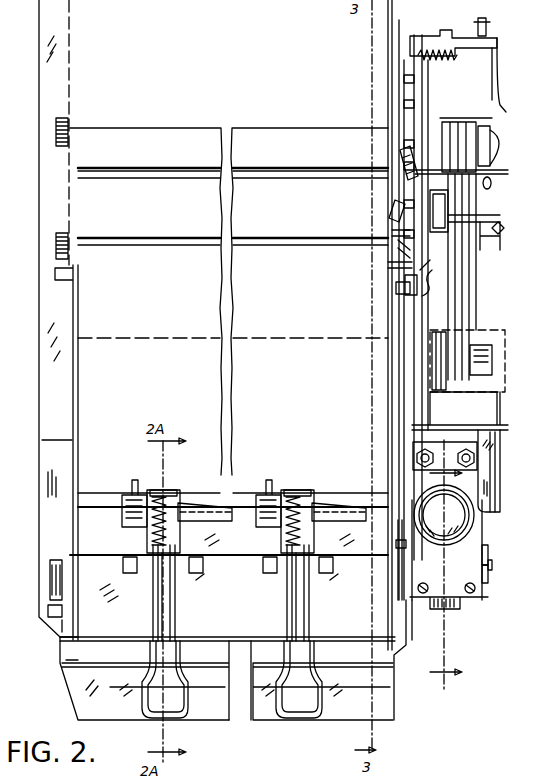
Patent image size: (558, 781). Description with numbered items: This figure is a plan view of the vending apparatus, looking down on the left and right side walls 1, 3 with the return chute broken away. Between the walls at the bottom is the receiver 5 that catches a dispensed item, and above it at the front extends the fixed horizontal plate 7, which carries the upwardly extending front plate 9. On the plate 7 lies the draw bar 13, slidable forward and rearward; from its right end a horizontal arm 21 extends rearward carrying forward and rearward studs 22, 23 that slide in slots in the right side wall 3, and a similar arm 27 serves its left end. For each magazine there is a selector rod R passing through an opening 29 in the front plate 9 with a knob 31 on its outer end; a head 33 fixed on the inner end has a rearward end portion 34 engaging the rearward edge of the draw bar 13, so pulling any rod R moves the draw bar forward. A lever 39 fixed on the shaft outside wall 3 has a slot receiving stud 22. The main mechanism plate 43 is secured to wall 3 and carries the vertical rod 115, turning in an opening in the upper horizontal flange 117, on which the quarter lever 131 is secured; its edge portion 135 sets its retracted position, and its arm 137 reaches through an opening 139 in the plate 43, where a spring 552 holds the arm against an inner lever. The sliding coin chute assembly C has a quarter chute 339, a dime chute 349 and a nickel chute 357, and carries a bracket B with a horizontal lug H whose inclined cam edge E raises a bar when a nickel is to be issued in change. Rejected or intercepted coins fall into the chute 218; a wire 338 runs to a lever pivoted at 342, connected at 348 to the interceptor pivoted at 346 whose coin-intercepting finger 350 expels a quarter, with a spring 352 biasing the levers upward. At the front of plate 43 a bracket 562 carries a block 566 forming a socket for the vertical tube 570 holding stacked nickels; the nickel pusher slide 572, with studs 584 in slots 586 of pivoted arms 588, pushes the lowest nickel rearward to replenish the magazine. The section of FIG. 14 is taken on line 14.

The left side wall 1 is at (62, 450).
The right side wall 3 is at (384, 362).
The receiver 5 is at (214, 660).
The fixed horizontal plate 7 is at (80, 630).
The front plate 9 is at (84, 641).
The draw bar 13 is at (98, 553).
The section line 14— 14 is at (445, 569).
The horizontal arm 21 is at (412, 452).
The forward stud 22 is at (398, 545).
The rearward stud 23 is at (396, 289).
The arm 27 is at (79, 402).
The opening 29 is at (158, 633).
The knob 31 is at (181, 710).
The head 33 is at (178, 540).
The rearward end portion 34 is at (210, 500).
The lever 39 is at (398, 416).
The main mechanism plate 43 is at (388, 101).
The vertical rod 115 is at (400, 235).
The upper horizontal flange 117 is at (417, 290).
The lever 131 is at (486, 230).
The edge portion 135 is at (394, 264).
The arm 137 is at (396, 222).
The opening 139 is at (396, 245).
The chute 218 is at (430, 335).
The wire 338 is at (492, 40).
The quarter chute 339 is at (416, 166).
The pivot 342 is at (418, 36).
The pivot 346 is at (414, 103).
The connection 348 is at (480, 30).
The dime chute 349 is at (462, 206).
The coin-intercepting finger 350 is at (470, 216).
The spring 352 is at (455, 58).
The nickel chute 357 is at (492, 184).
The spring 552 is at (398, 198).
The bracket 562 is at (466, 600).
The block 566 is at (476, 586).
The vertical tube 570 is at (470, 512).
The nickel pusher slide 572 is at (468, 525).
The studs 584 is at (488, 564).
The slots 586 is at (488, 574).
The arms 588 is at (488, 550).
The bracket B is at (500, 434).
The sliding coin chute assembly C is at (497, 283).
The inclined cam edge E is at (488, 452).
The horizontal lug H is at (490, 494).
The selector rod R is at (171, 600).